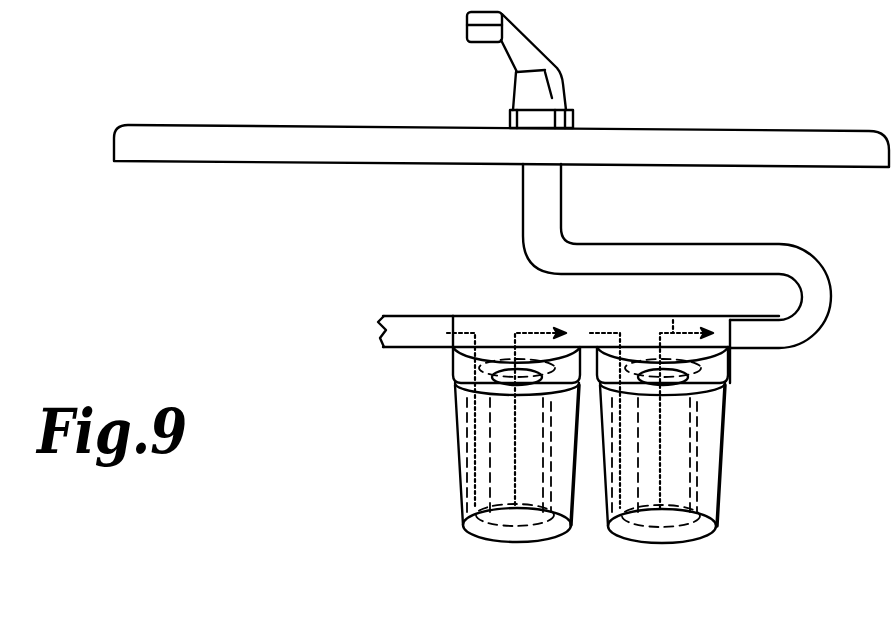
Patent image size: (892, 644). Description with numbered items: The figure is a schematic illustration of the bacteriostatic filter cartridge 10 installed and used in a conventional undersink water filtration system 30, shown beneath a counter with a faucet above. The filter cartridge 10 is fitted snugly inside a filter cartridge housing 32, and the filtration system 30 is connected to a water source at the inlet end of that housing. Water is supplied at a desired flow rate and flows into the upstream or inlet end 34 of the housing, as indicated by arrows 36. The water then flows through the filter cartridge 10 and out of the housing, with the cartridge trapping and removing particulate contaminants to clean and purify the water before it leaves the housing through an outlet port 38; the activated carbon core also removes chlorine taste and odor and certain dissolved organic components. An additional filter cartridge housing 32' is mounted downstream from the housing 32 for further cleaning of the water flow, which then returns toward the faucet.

The bacteriostatic filter cartridge 10 is at (497, 548).
The undersink system 30 is at (421, 431).
The filter cartridge housing 32 is at (476, 456).
The additional filter cartridge housing 32' is at (710, 455).
The inlet end 34 is at (382, 333).
The arrows 36 is at (438, 315).
The outlet port 38 is at (525, 315).